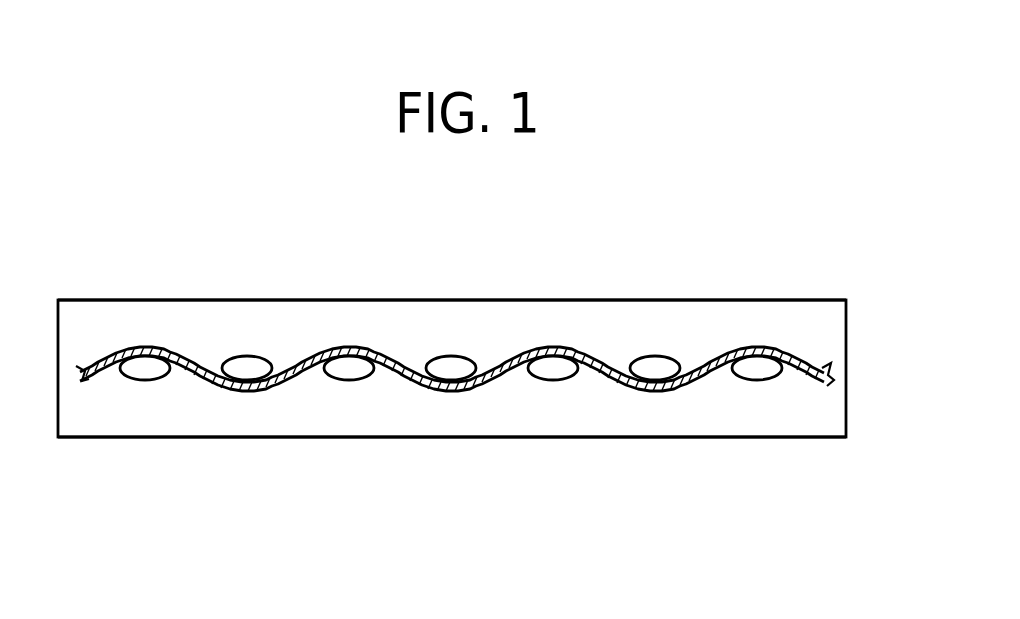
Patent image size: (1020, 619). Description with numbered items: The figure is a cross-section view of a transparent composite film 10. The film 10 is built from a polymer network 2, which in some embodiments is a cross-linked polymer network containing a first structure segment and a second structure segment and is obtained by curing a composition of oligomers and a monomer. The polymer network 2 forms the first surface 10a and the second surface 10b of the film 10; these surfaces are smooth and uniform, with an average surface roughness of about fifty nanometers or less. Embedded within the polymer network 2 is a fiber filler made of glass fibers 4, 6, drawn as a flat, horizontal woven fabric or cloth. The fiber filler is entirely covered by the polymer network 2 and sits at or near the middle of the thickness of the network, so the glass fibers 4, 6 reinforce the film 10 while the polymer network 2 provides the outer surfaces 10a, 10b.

The transparent composite film 10 is at (786, 274).
The polymer network 2 is at (834, 330).
The first surface 10a is at (512, 299).
The second surface 10b is at (623, 437).
The glass fiber 4 is at (104, 359).
The glass fiber 6 is at (150, 364).